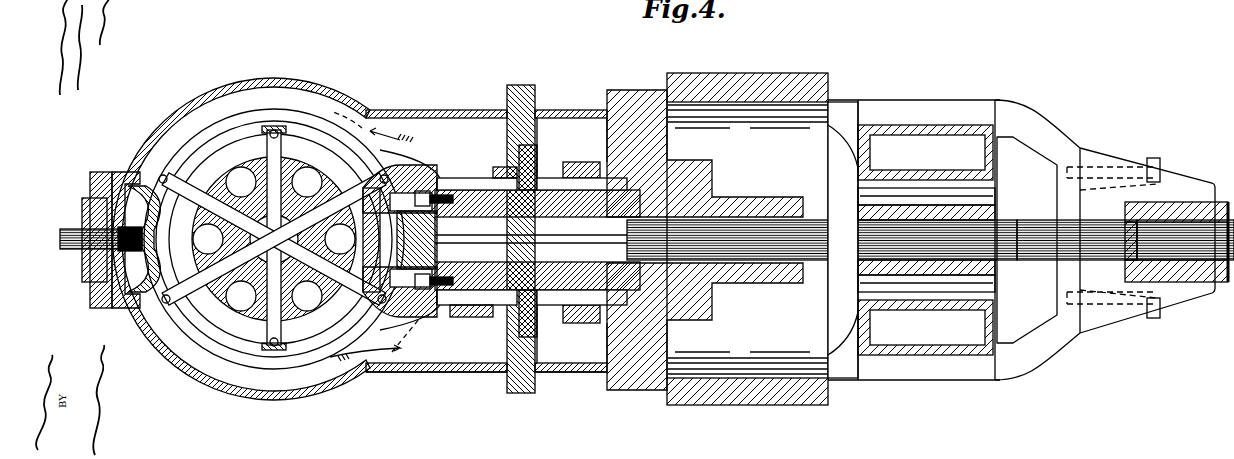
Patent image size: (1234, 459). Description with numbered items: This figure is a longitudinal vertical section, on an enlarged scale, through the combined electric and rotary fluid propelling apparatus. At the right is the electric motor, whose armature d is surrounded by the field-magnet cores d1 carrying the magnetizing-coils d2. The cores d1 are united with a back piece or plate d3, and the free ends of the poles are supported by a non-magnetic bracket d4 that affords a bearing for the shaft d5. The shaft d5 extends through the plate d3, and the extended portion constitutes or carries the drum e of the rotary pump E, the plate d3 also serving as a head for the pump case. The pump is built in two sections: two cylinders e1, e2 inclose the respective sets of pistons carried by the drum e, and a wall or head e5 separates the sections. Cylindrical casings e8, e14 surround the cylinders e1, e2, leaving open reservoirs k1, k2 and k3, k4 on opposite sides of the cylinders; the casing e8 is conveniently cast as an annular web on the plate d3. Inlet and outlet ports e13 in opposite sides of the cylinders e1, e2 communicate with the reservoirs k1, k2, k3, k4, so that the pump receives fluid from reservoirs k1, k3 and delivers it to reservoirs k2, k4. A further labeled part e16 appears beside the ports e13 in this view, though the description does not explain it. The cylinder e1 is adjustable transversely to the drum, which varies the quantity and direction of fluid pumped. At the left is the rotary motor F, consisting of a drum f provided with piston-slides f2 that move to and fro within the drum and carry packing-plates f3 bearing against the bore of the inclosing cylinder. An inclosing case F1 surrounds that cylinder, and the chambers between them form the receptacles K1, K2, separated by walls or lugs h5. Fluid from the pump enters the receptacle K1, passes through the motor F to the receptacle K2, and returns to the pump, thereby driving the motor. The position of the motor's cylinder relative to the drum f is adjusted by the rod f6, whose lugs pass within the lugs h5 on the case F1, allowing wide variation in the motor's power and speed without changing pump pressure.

The rotary engine or motor F is at (288, 78).
The inclosing case F1 is at (186, 374).
The receptacle K1 is at (278, 237).
The receptacle K2 is at (288, 258).
The drum f is at (262, 315).
The piston-slides f2 is at (183, 192).
The packing-plates f3 is at (168, 180).
The rod f6 is at (60, 236).
The walls or lugs h5 is at (404, 176).
The rotary pump E is at (521, 229).
The drum e is at (496, 213).
The cylinder e1 is at (594, 160).
The cylinder e2 is at (459, 173).
The wall or head e5 is at (540, 165).
The cylindrical casing e8 is at (576, 372).
The inlet and outlet ports e13 is at (485, 176).
The cylindrical casing e14 is at (470, 372).
The sleeve e16 is at (608, 176).
The reservoir k1 is at (451, 334).
The reservoir k2 is at (572, 148).
The reservoir k3 is at (422, 332).
The reservoir k4 is at (431, 149).
The armature d is at (992, 264).
The field-magnet cores d1 is at (916, 112).
The magnetizing-coils d2 is at (780, 86).
The back piece or plate d3 is at (648, 106).
The non-magnetic bracket d4 is at (1180, 300).
The shaft d5 is at (1040, 230).